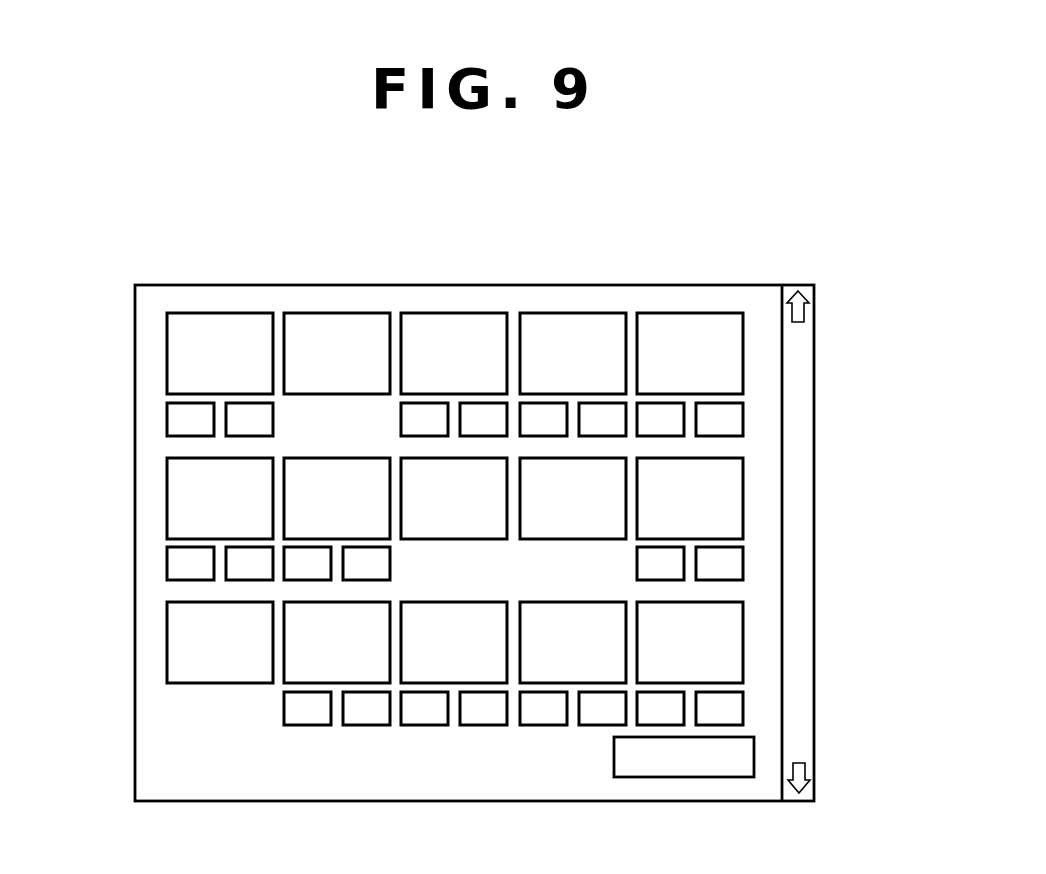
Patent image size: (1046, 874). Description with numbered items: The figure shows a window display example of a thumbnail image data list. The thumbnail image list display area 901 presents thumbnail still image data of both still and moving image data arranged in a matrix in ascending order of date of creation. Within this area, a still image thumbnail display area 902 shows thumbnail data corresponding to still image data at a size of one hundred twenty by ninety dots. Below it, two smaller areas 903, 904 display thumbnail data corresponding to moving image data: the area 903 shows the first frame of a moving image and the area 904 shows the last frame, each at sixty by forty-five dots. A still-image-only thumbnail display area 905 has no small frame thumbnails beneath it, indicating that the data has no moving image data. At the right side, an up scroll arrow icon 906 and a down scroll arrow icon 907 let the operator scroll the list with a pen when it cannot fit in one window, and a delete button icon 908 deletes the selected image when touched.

The thumbnail image list display area 901 is at (469, 303).
The still image thumbnail display area 902 is at (220, 326).
The moving image first frame thumbnail display area 903 is at (182, 422).
The moving image last frame thumbnail display area 904 is at (245, 430).
The still-image-only thumbnail display area 905 is at (335, 326).
The up scroll arrow icon 906 is at (803, 312).
The down scroll arrow icon 907 is at (806, 772).
The delete button icon 908 is at (686, 778).